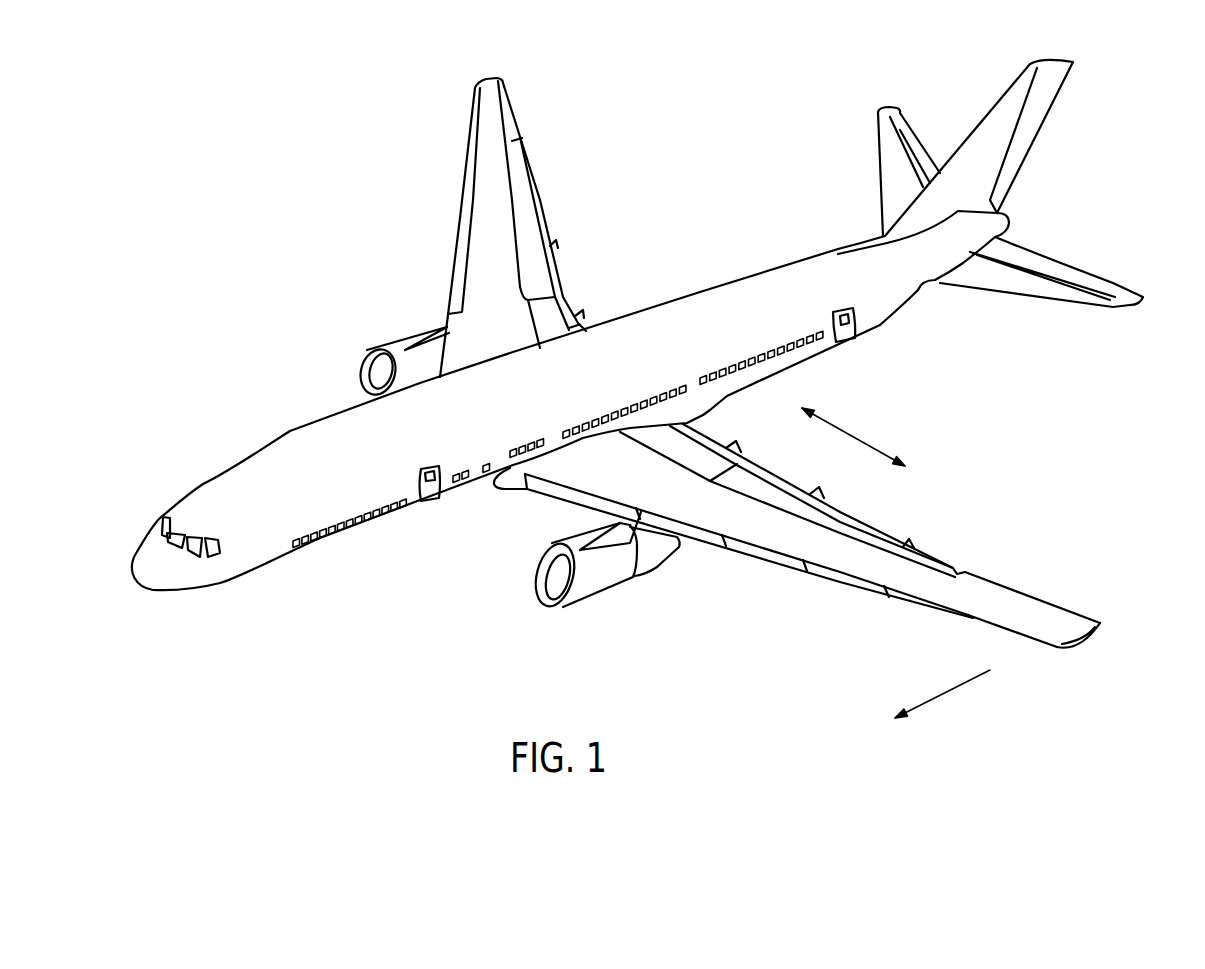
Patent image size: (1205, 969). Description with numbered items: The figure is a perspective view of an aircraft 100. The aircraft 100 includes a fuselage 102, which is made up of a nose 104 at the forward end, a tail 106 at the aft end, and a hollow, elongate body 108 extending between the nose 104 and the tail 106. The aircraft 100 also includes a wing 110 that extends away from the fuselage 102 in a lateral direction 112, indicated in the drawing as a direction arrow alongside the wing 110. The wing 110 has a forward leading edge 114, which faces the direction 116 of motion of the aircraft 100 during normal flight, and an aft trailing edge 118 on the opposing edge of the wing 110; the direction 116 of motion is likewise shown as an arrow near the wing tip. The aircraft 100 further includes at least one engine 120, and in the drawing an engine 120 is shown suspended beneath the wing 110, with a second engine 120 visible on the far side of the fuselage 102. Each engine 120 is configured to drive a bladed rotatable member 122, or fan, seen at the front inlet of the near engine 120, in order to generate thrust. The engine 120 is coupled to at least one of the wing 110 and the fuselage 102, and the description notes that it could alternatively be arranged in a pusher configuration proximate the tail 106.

The aircraft 100 is at (338, 237).
The fuselage 102 is at (672, 322).
The nose 104 is at (210, 497).
The tail 106 is at (916, 310).
The hollow, elongate body 108 is at (469, 436).
The wing 110 is at (803, 548).
The lateral direction 112 is at (855, 437).
The forward leading edge 114 is at (975, 622).
The direction of motion 116 is at (955, 690).
The aft trailing edge 118 is at (1015, 580).
The engine 120 is at (392, 345).
The bladed rotatable member 122 is at (557, 578).